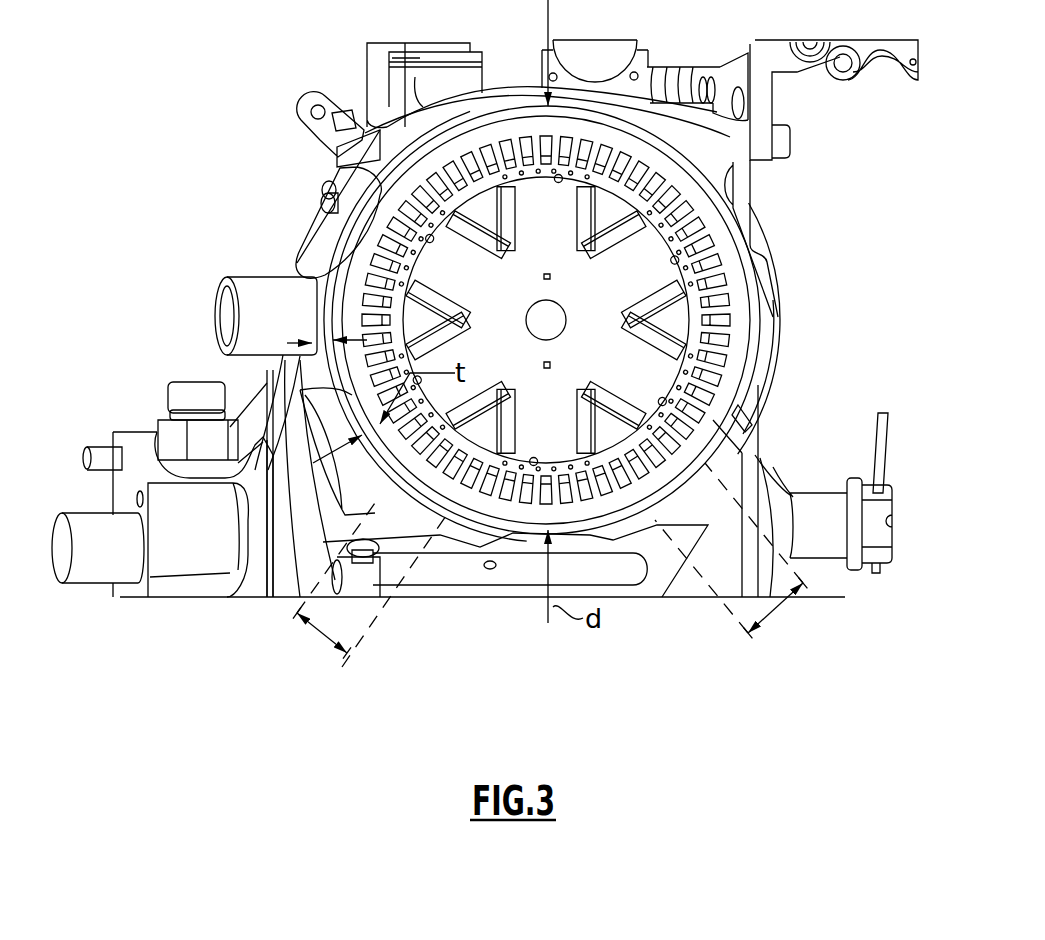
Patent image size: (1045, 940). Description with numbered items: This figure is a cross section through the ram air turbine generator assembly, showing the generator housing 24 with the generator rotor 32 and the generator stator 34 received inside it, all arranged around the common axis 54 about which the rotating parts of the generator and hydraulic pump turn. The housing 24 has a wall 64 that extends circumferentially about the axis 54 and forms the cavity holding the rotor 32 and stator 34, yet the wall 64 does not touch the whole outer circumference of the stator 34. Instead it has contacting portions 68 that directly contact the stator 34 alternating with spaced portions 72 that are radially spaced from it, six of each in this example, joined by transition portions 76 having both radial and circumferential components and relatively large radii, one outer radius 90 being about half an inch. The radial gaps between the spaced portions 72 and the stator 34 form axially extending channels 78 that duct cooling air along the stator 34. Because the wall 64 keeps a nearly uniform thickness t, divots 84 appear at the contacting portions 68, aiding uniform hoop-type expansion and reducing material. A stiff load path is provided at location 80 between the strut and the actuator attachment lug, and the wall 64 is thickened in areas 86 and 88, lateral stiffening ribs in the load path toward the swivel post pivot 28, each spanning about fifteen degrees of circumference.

The generator housing 24 is at (770, 265).
The swivel post pivot 28 is at (105, 535).
The generator rotor 32 is at (650, 363).
The generator stator 34 is at (770, 373).
The common axis 54 is at (556, 314).
The wall 64 is at (734, 233).
The contacting portions 68 is at (327, 192).
The spaced portions 72 is at (402, 115).
The transition portions 76 is at (373, 157).
The channels 78 is at (468, 108).
The location 80 is at (808, 122).
The divots 84 is at (324, 248).
The area 86 is at (322, 652).
The area 88 is at (778, 620).
The outer radius 90 is at (312, 268).